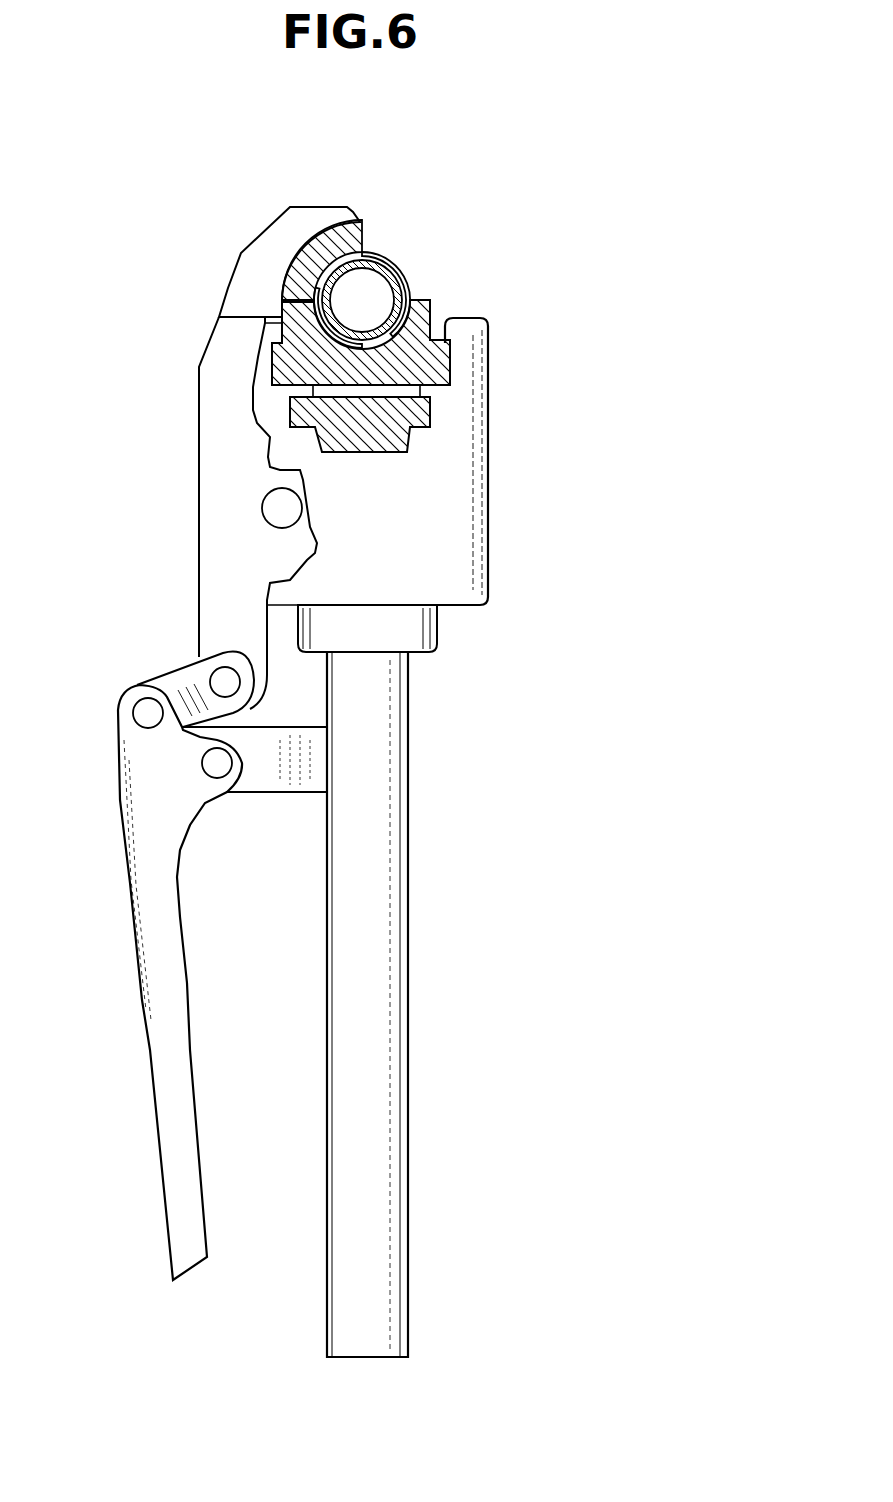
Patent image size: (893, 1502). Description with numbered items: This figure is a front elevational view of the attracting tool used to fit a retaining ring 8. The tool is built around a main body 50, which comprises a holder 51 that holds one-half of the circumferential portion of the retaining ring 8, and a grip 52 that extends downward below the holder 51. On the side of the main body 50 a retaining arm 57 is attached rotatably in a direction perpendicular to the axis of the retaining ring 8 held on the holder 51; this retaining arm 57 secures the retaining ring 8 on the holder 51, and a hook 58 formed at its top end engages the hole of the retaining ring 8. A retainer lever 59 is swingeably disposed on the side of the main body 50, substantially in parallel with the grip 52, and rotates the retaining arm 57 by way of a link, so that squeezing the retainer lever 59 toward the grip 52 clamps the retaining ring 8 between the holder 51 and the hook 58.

The retaining arm 57 is at (320, 215).
The hook 58 is at (330, 260).
The retaining ring 8 is at (407, 267).
The holder 51 is at (433, 307).
The main body 50 is at (470, 500).
The grip 52 is at (372, 1022).
The retainer lever 59 is at (172, 1050).